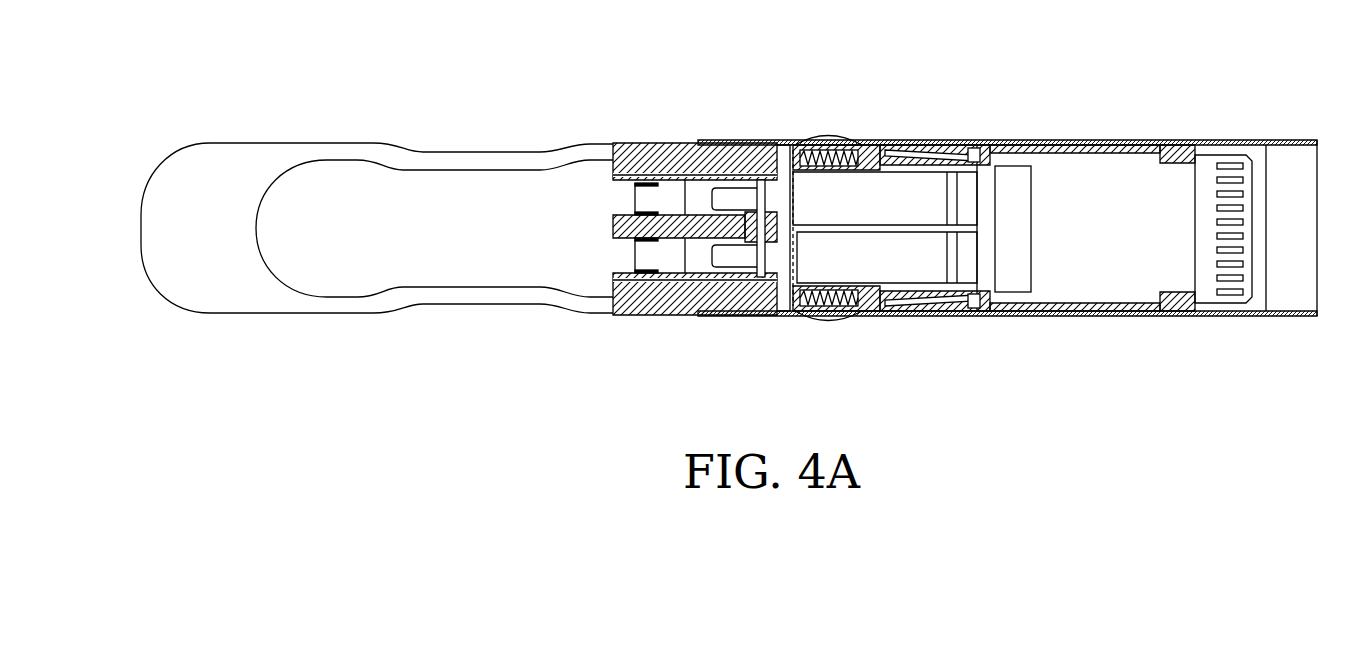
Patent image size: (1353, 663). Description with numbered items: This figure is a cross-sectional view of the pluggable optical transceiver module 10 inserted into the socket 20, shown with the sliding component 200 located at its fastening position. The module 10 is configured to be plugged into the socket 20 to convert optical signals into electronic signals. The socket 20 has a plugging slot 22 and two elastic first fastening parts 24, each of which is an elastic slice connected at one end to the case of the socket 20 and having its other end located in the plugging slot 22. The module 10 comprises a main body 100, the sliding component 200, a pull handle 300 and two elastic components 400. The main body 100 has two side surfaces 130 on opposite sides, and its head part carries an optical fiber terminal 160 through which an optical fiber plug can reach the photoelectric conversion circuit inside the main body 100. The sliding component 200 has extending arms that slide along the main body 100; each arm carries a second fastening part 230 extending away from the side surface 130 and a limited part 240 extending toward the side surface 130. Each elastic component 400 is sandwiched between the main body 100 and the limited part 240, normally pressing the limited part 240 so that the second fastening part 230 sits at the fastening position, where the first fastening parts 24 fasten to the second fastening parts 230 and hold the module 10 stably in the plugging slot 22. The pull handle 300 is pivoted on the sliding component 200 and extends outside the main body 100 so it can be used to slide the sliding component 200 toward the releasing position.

The pluggable optical transceiver module 10 is at (617, 120).
The socket 20 is at (1296, 132).
The plugging slot 22 is at (788, 142).
The first fastening part 24 is at (950, 140).
The main body 100 is at (655, 320).
The side surface 130 is at (1084, 320).
The optical fiber terminal 160 is at (638, 200).
The sliding component 200 is at (752, 320).
The second fastening part 230 is at (972, 150).
The limited part 240 is at (877, 300).
The pull handle 300 is at (340, 152).
The elastic component 400 is at (825, 320).